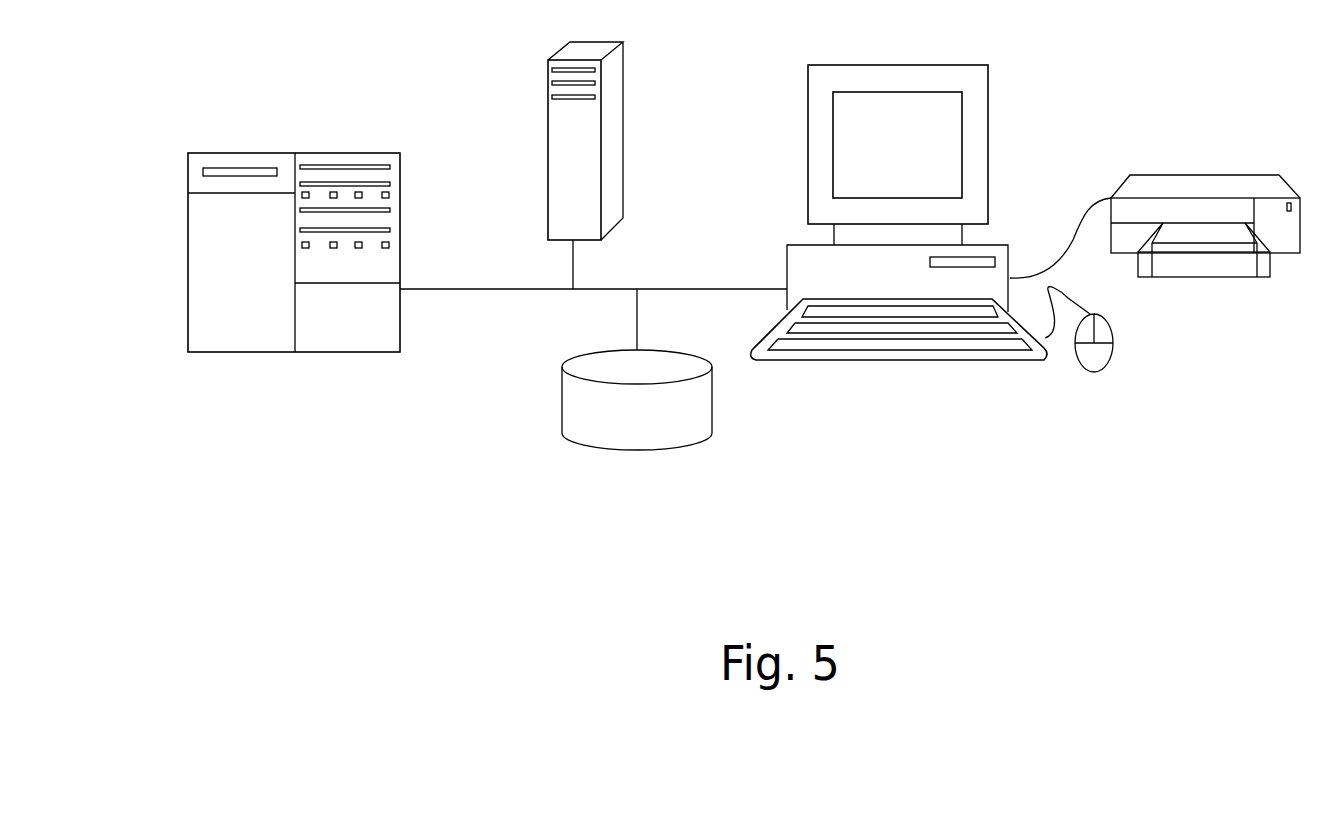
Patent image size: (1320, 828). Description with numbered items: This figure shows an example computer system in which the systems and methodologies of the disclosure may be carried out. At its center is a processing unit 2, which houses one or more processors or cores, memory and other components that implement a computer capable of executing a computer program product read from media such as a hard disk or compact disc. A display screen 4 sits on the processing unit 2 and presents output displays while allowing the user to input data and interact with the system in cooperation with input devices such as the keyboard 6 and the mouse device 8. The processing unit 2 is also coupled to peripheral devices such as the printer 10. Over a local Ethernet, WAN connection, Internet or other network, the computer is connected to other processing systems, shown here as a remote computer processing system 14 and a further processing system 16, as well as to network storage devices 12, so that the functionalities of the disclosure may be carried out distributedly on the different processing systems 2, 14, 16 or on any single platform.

The processing unit 2 is at (787, 270).
The display screen 4 is at (988, 138).
The keyboard 6 is at (957, 362).
The mouse device 8 is at (1112, 357).
The printer 10 is at (1203, 173).
The network storage devices 12 is at (660, 450).
The remote computer processing system 14 is at (625, 130).
The processing system 16 is at (337, 153).